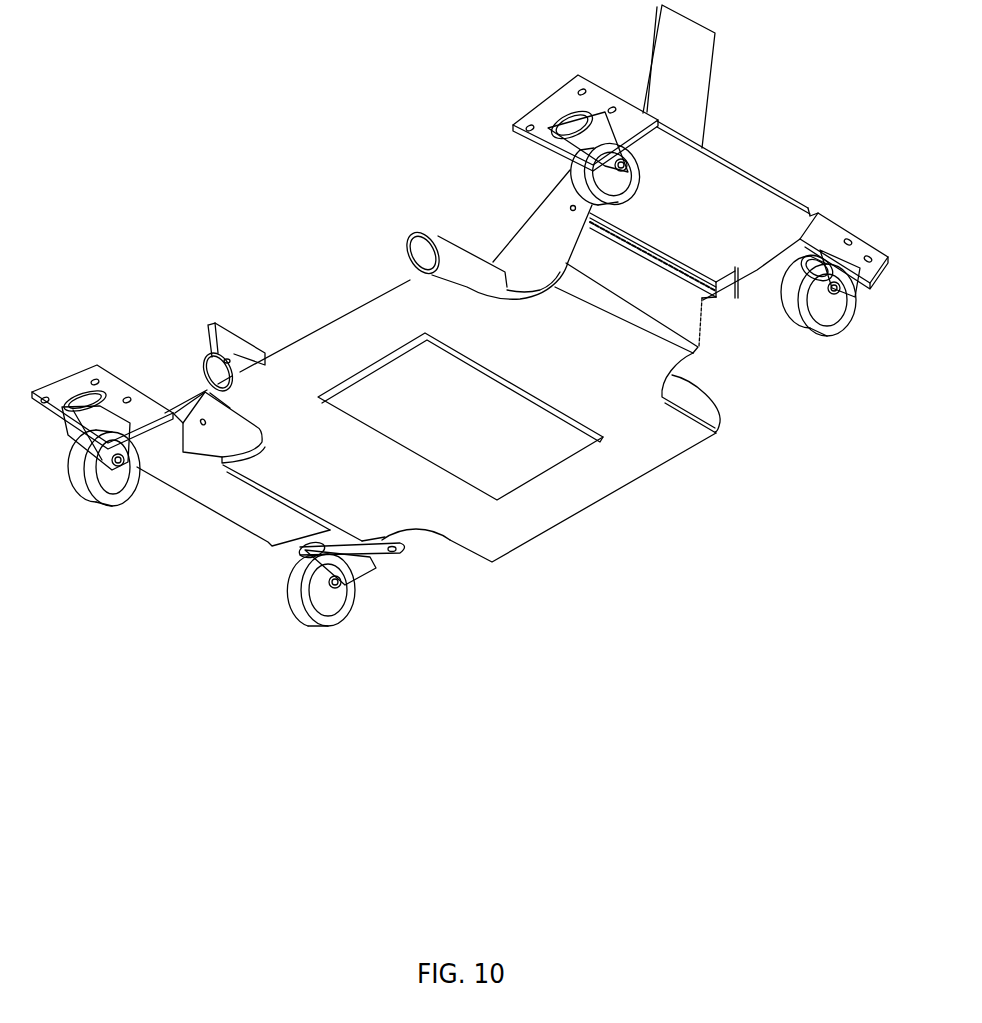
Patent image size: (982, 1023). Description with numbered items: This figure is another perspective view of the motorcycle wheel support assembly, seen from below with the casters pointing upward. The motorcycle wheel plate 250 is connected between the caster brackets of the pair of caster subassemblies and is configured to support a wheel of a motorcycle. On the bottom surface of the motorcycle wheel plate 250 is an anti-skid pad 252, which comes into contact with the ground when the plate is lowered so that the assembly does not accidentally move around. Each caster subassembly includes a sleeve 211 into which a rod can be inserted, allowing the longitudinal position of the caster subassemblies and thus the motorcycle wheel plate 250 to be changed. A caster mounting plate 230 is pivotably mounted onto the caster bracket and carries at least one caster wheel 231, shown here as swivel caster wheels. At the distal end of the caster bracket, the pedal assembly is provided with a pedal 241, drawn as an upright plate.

The sleeve 211 is at (452, 248).
The caster mounting plate 230 is at (742, 189).
The caster wheel 231 is at (818, 325).
The pedal 241 is at (697, 62).
The motorcycle wheel plate 250 is at (640, 450).
The anti-skid pad 252 is at (508, 472).